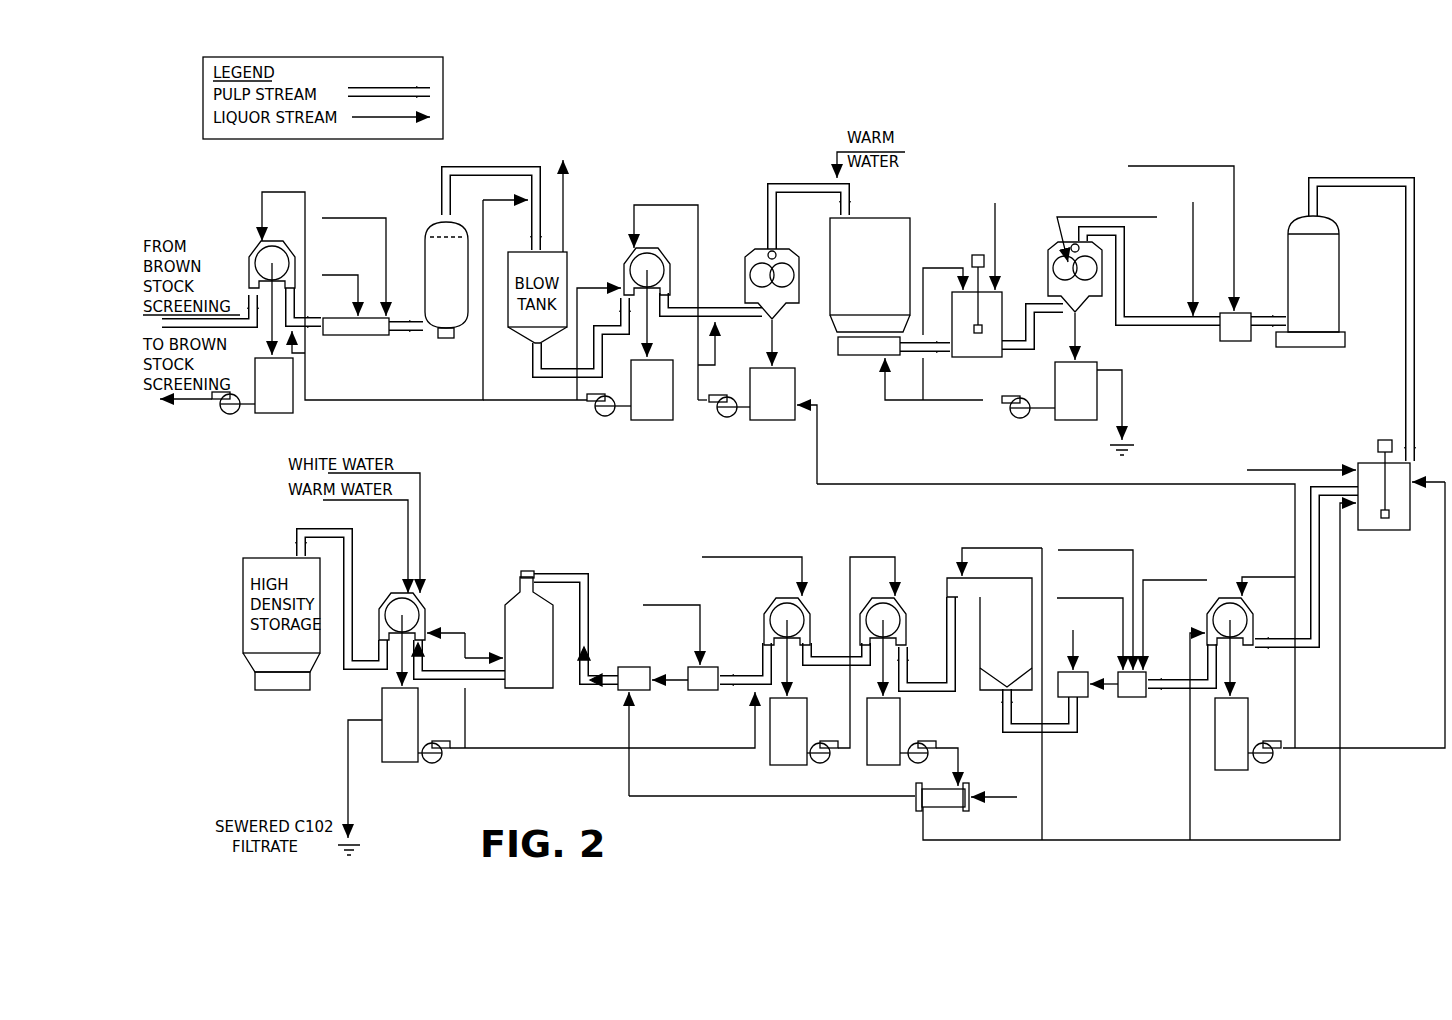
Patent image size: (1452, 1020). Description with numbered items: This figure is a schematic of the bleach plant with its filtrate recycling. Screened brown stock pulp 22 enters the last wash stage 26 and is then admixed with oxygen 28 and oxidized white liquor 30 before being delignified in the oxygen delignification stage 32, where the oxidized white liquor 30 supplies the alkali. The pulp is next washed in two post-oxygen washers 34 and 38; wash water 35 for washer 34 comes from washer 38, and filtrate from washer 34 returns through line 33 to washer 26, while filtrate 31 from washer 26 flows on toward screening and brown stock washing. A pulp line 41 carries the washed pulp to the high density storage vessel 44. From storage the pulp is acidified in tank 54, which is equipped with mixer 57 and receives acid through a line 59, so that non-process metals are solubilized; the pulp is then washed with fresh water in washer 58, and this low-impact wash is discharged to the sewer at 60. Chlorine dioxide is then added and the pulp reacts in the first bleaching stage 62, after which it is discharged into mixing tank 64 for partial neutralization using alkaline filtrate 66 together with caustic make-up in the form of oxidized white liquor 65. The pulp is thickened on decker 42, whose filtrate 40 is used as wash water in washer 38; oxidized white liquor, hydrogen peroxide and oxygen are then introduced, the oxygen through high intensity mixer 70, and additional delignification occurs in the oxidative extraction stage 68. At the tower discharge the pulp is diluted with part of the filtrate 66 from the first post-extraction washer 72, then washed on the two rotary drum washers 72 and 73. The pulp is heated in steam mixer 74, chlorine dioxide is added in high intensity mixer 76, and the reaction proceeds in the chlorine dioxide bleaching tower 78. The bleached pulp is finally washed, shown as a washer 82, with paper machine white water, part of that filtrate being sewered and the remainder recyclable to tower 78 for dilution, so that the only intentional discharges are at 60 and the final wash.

The pulp 22 is at (240, 316).
The last wash stage 26 is at (257, 240).
The oxygen 28 is at (350, 276).
The oxidized white liquor 30 is at (392, 216).
The filtrate 31 is at (212, 401).
The oxygen delignification stage 32 is at (436, 315).
The line 33 is at (297, 192).
The washer 34 is at (660, 248).
The wash water 35 is at (660, 204).
The washer 38 is at (762, 250).
The filtrate 40 is at (780, 272).
The pulp line to high density storage 41 is at (778, 183).
The decker 42 is at (1220, 603).
The high density storage vessel 44 is at (876, 309).
The tank 54 is at (1002, 303).
The mixer 57 is at (975, 255).
The washer 58 is at (1062, 252).
The acid line 59 is at (995, 217).
The sewer discharge 60 is at (1125, 408).
The first bleaching stage 62 is at (1303, 317).
The mixing tank 64 is at (1412, 466).
The oxidized white liquor 65 is at (1315, 468).
The alkaline filtrate 66 is at (1027, 841).
The oxidative extraction stage 68 is at (997, 663).
The high intensity mixer 70 is at (1082, 698).
The first post extraction stage washer 72 is at (902, 608).
The rotary drum washer 73 is at (805, 608).
The steam mixer 74 is at (705, 690).
The high intensity mixer 76 is at (633, 667).
The chlorine dioxide bleaching tower 78 is at (520, 663).
The washer 82 is at (340, 668).